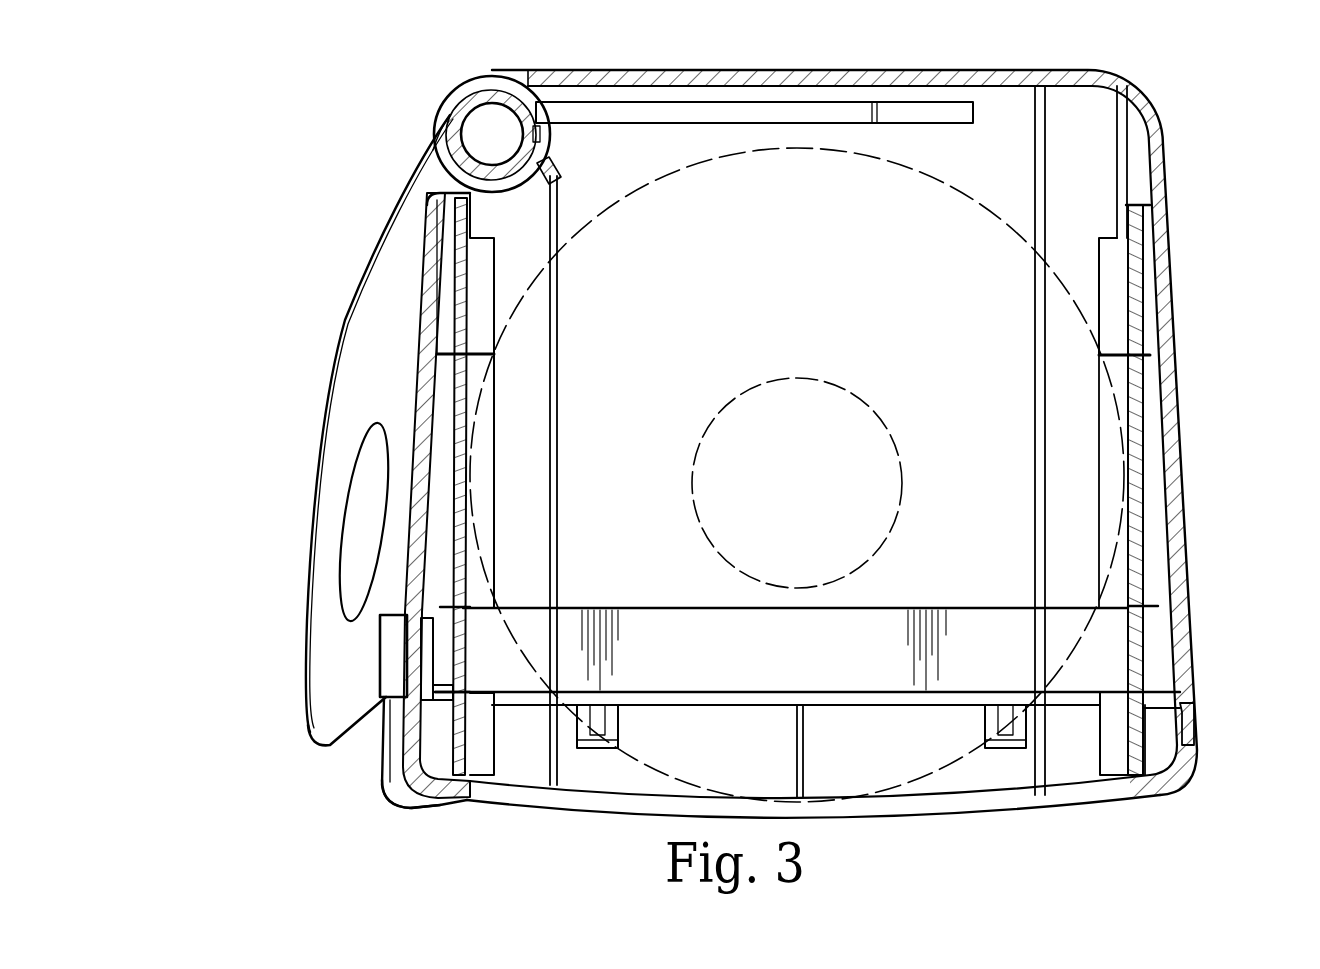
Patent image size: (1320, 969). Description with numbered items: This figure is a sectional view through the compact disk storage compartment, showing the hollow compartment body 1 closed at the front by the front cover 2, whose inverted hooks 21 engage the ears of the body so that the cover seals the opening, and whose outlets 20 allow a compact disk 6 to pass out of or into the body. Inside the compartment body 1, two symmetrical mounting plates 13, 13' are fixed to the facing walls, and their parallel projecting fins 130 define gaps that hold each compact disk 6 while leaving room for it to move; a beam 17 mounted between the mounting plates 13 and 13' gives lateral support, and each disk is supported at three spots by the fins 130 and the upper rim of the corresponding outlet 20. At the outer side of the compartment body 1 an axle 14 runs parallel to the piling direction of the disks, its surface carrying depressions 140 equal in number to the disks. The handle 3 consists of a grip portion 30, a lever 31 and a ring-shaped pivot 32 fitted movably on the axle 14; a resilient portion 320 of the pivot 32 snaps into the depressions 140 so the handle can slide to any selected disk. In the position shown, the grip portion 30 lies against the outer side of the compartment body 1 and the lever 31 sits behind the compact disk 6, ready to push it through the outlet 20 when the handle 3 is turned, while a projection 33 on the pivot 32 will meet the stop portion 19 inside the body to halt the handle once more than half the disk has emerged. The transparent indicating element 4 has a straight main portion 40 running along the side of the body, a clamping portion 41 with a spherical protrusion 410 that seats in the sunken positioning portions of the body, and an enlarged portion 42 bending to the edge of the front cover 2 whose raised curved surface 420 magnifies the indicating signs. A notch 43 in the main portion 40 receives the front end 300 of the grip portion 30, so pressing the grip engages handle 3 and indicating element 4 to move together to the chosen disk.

The compartment body 1 is at (1160, 172).
The front cover 2 is at (1185, 800).
The outlet 20 is at (1068, 795).
The inverted hook 21 is at (1196, 722).
The handle 3 is at (348, 302).
The grip portion 30 is at (352, 362).
The front end of the grip portion 300 is at (400, 613).
The lever 31 is at (822, 105).
The pivot 32 is at (502, 74).
The resilient portion 320 is at (476, 98).
The projection 33 is at (559, 172).
The indicating element 4 is at (384, 806).
The main portion 40 is at (390, 760).
The clamping portion 41 is at (392, 693).
The spherical protrusion 410 is at (428, 655).
The enlarged portion 42 is at (425, 806).
The raised curved surface 420 is at (450, 812).
The notch 43 is at (388, 706).
The compact disk 6 is at (958, 774).
The mounting plate 13 is at (1211, 490).
The mounting plate 13' is at (376, 486).
The fin 130 is at (1122, 522).
The axle 14 is at (440, 172).
The depression 140 is at (461, 124).
The beam 17 is at (1122, 636).
The stop portion 19 is at (475, 213).